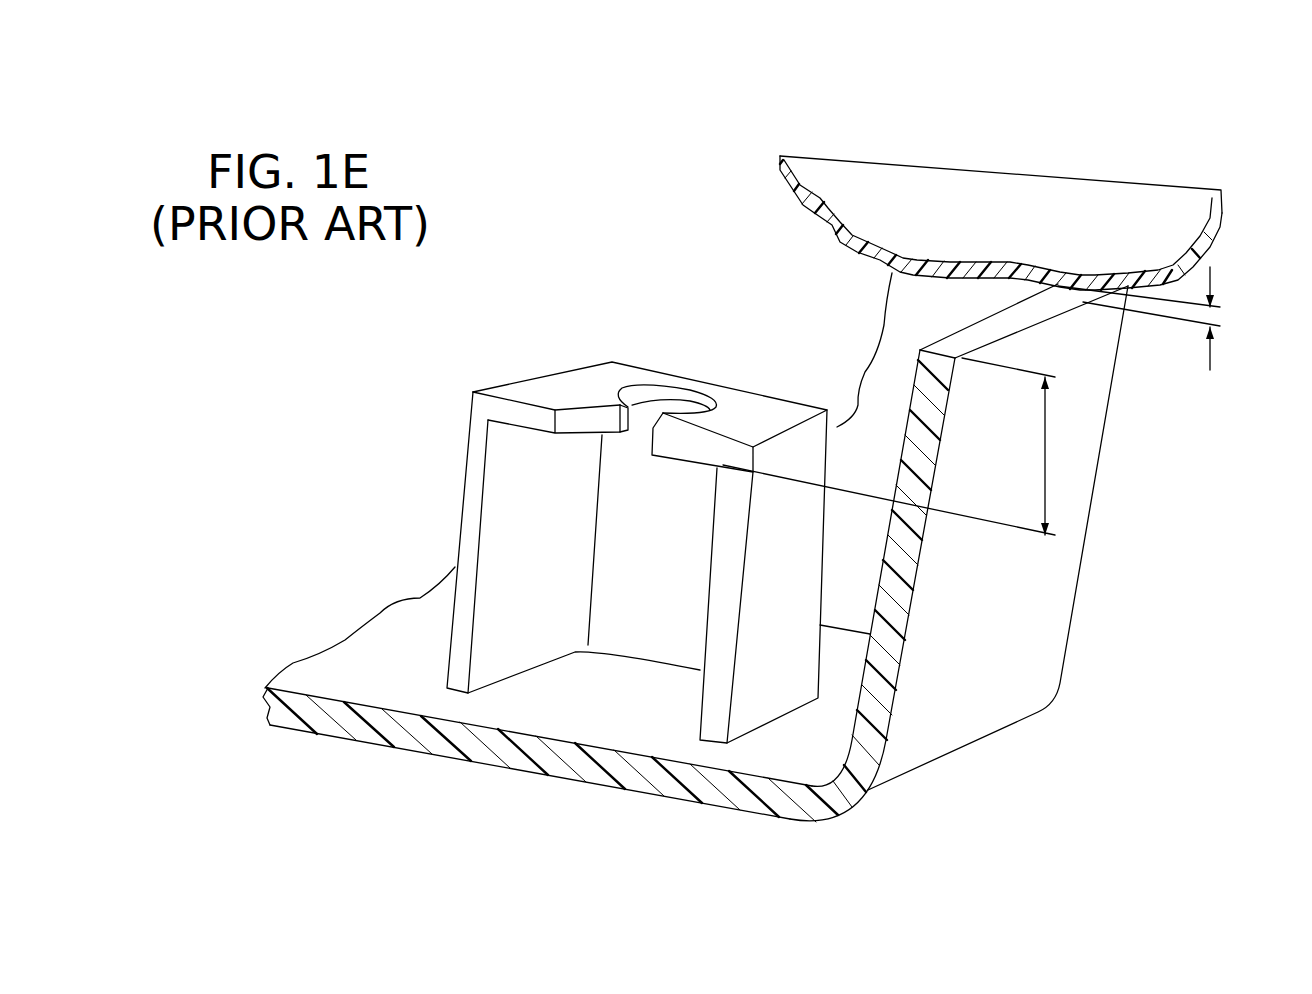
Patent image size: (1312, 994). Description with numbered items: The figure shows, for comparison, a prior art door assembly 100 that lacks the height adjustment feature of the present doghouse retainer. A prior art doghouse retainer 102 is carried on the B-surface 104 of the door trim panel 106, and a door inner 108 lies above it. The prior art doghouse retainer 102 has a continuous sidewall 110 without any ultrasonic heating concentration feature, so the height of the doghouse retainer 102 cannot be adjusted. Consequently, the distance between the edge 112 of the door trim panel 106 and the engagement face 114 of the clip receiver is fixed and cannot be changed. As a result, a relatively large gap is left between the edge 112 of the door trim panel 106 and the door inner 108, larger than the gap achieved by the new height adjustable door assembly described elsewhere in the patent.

The prior art door assembly 100 is at (1157, 118).
The doghouse retainer 102 is at (445, 466).
The B-surface 104 is at (373, 660).
The door trim panel 106 is at (1028, 595).
The door inner 108 is at (1013, 193).
The continuous sidewall 110 is at (462, 495).
The edge 112 is at (980, 333).
The engagement face 114 is at (580, 435).